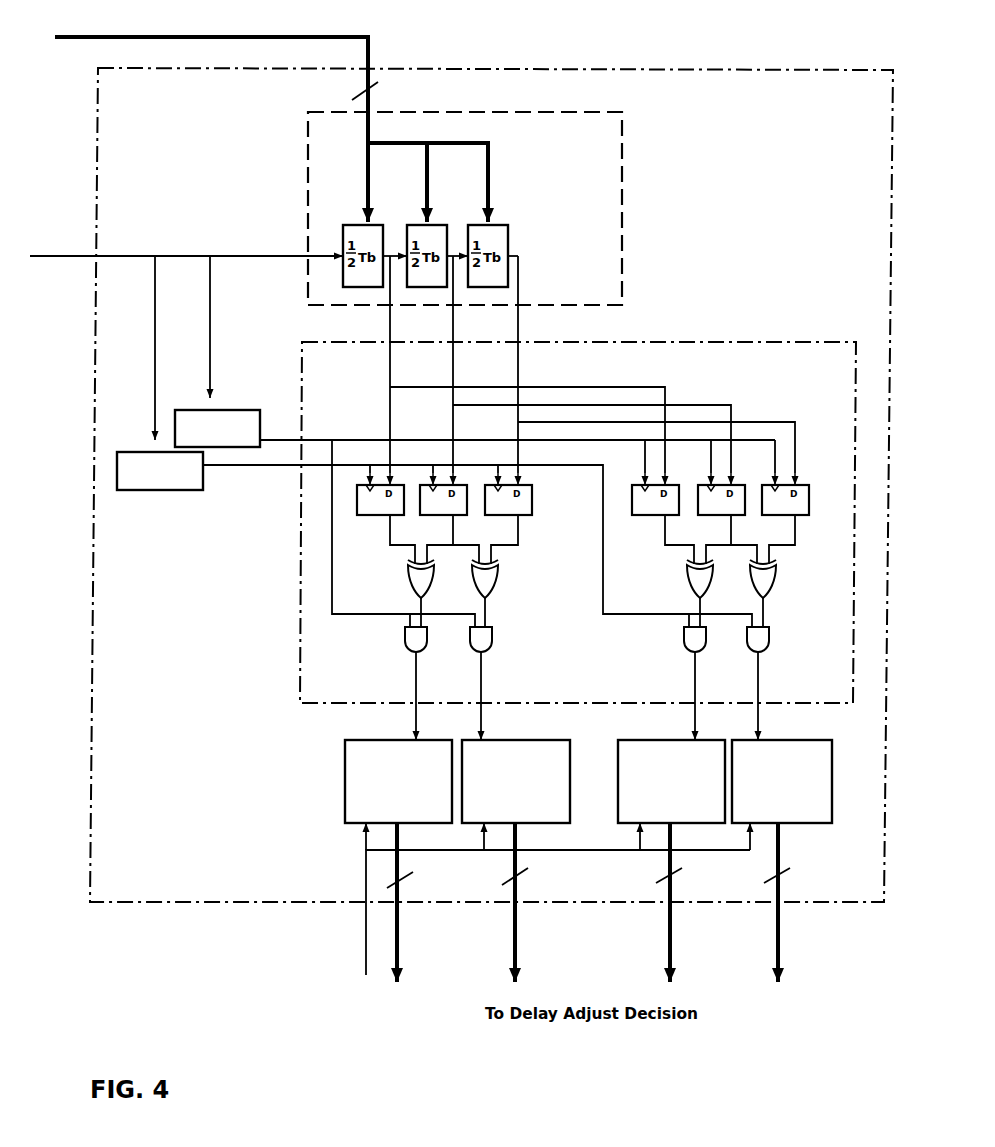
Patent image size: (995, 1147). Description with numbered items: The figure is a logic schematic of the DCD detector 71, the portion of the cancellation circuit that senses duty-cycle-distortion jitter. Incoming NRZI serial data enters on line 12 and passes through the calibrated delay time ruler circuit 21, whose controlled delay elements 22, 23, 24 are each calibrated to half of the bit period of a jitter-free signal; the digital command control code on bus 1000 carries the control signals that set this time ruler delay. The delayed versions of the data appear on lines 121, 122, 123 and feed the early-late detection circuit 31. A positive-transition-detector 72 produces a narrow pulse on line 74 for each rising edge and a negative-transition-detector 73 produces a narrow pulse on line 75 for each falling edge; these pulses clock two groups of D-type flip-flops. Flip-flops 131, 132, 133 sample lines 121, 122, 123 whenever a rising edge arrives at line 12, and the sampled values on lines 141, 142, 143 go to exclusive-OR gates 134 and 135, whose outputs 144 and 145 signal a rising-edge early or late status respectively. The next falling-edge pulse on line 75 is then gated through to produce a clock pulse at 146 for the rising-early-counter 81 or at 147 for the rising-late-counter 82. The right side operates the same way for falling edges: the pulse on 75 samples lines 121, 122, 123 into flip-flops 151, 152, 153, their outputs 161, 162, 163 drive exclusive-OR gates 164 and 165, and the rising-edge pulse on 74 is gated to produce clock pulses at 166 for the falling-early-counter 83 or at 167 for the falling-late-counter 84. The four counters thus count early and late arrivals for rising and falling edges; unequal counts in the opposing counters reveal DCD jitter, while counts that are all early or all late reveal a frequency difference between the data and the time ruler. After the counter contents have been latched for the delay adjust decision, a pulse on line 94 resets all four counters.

The bus 1000 is at (368, 56).
The line 12 is at (75, 256).
The calibrated delay time ruler circuit 21 is at (622, 162).
The controlled delay element 22 is at (365, 224).
The controlled delay element 23 is at (430, 224).
The controlled delay element 24 is at (492, 224).
The early-late detection circuit 31 is at (793, 342).
The DCD detector 71 is at (812, 71).
The positive-transition-detector 72 is at (181, 490).
The negative-transition-detector 73 is at (198, 410).
The line 74 is at (284, 466).
The line 75 is at (291, 440).
The rising-early-counter 81 is at (345, 745).
The rising-late-counter 82 is at (571, 749).
The falling-early-counter 83 is at (618, 765).
The falling-late-counter 84 is at (833, 757).
The line 94 is at (366, 938).
The line 121 is at (391, 386).
The line 122 is at (454, 386).
The line 123 is at (520, 386).
The D-type flip flop 131 is at (403, 488).
The D-type flip flop 132 is at (466, 488).
The D-type flip flop 133 is at (532, 488).
The exclusive-OR gate 134 is at (410, 581).
The exclusive-OR gate 135 is at (497, 584).
The line 141 is at (397, 545).
The line 142 is at (462, 545).
The line 143 is at (529, 545).
The output 144 is at (413, 610).
The output 145 is at (489, 620).
The line 146 is at (413, 680).
The line 147 is at (484, 680).
The D-type flip flop 151 is at (680, 488).
The D-type flip flop 152 is at (745, 488).
The D-type flip flop 153 is at (808, 488).
The output 161 is at (669, 545).
The output 162 is at (735, 545).
The output 163 is at (798, 545).
The exclusive-OR gate 164 is at (694, 608).
The exclusive-OR gate 165 is at (767, 612).
The line 166 is at (690, 678).
The line 167 is at (759, 680).